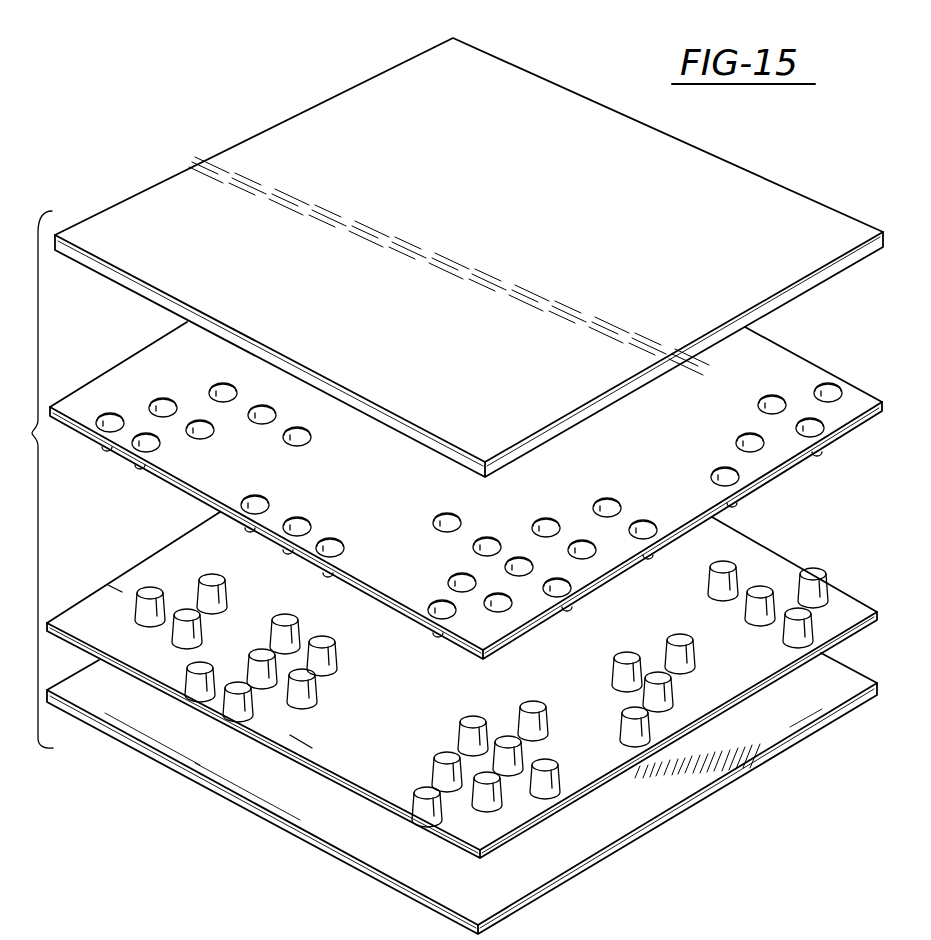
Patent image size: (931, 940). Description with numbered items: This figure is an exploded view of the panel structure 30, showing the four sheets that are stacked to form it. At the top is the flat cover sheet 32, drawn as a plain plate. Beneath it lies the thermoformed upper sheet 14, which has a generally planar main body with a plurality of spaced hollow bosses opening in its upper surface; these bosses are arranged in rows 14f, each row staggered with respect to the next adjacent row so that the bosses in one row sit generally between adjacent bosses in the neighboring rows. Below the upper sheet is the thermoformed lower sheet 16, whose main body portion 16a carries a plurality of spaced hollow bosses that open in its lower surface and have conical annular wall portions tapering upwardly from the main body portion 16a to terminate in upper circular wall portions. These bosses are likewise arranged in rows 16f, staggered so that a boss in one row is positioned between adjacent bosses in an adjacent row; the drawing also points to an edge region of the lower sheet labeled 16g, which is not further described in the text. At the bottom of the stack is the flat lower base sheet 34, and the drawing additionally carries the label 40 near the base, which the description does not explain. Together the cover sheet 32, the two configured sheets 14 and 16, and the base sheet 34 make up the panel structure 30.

The panel structure 30 is at (52, 230).
The flat cover sheet 32 is at (252, 118).
The upper sheet 14 is at (466, 469).
The rows 14f is at (210, 390).
The lower sheet 16 is at (462, 672).
The main body portion 16a is at (116, 592).
The rows 16f is at (437, 812).
The plate edge 16g is at (309, 742).
The flat lower base sheet 34 is at (285, 838).
The base 40 is at (621, 928).